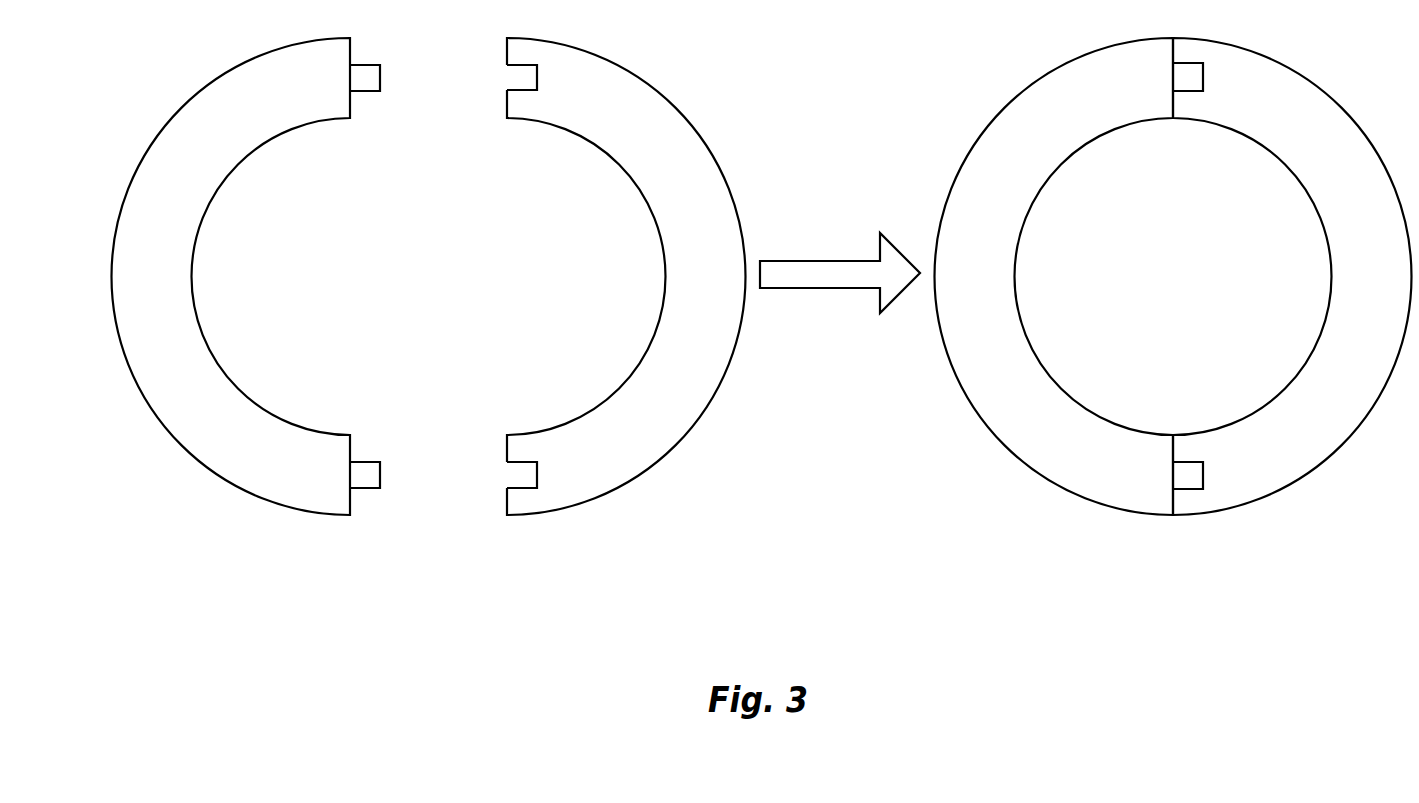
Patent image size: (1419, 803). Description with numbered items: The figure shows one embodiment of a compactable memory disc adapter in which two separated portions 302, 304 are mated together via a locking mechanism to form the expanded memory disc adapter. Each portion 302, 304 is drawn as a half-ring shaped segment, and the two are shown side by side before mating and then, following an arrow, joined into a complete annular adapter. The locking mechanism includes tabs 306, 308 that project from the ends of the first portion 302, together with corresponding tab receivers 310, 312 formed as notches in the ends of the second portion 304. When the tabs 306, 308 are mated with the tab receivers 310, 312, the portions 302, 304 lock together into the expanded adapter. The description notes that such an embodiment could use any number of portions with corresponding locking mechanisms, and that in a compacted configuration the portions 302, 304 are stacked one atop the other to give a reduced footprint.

The separated portion 302 is at (133, 286).
The separated portion 304 is at (684, 286).
The tab 306 is at (381, 77).
The tab 308 is at (381, 477).
The tab receiver 310 is at (519, 81).
The tab receiver 312 is at (519, 477).